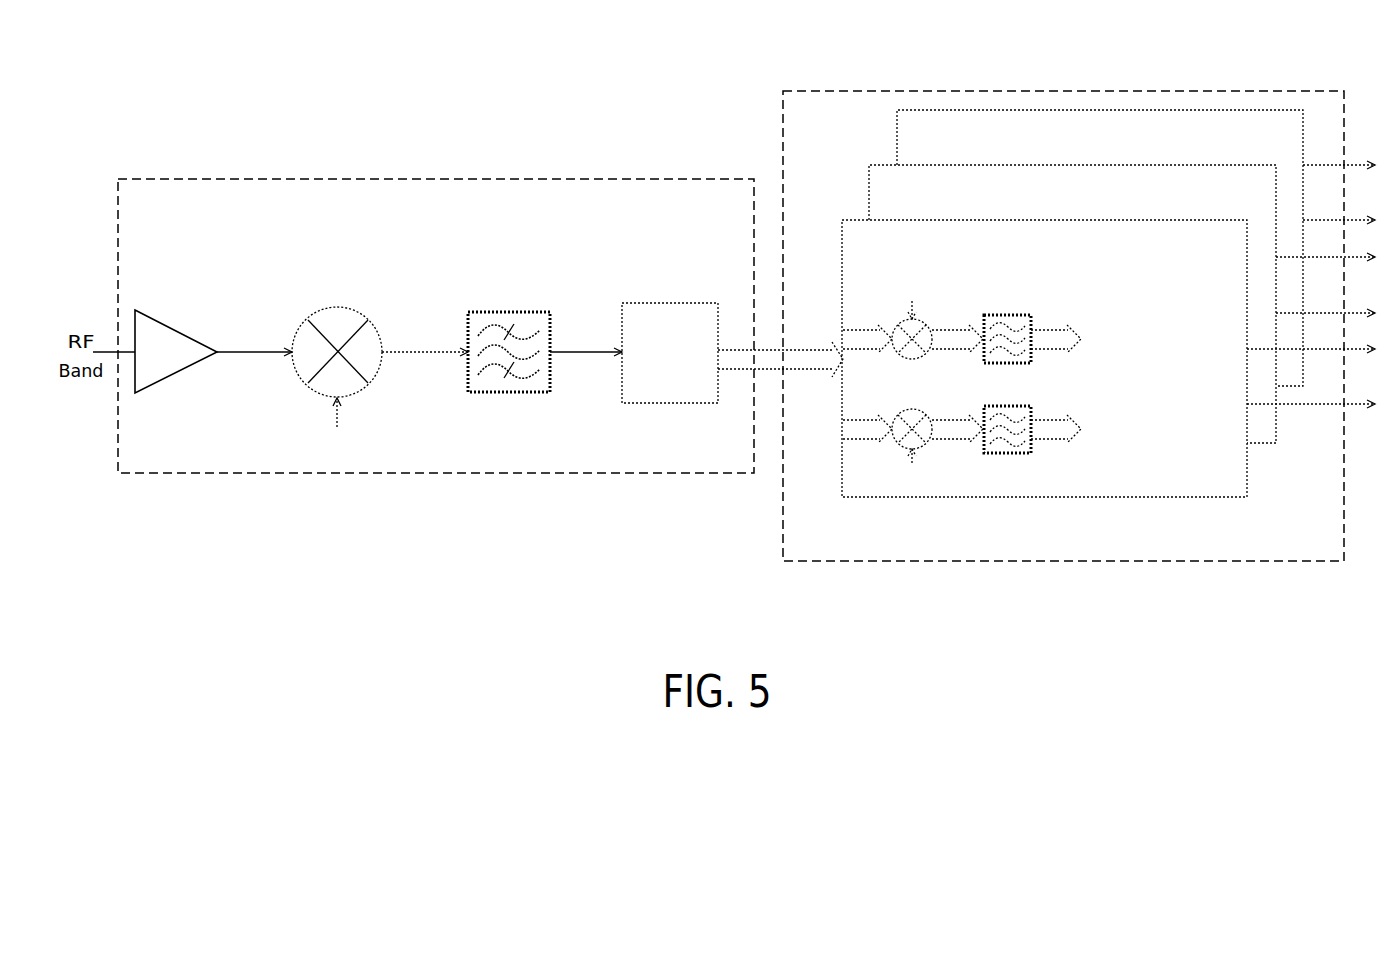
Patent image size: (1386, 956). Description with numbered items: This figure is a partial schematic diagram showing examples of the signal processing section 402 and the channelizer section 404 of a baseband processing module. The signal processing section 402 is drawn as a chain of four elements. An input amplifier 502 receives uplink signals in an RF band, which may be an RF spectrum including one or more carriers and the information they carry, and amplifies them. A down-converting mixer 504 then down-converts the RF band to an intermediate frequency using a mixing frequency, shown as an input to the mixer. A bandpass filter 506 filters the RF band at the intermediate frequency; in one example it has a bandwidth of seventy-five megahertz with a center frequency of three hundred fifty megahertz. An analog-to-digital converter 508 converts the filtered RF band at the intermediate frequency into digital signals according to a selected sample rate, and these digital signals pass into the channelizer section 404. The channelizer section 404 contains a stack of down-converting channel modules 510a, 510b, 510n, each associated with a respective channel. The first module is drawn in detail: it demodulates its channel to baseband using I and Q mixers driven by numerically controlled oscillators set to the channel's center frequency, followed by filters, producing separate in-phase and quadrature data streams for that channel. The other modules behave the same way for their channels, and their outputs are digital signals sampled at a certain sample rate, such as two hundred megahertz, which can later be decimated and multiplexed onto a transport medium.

The signal processing section 402 is at (288, 165).
The channelizer section 404 is at (853, 62).
The input amplifier 502 is at (177, 331).
The down-converting mixer 504 is at (357, 320).
The bandpass filter 506 is at (521, 312).
The analog-to-digital converter 508 is at (686, 304).
The down-converting channel module 510a is at (958, 250).
The down-converting channel module 510b is at (980, 195).
The down-converting channel module 510n is at (1002, 145).